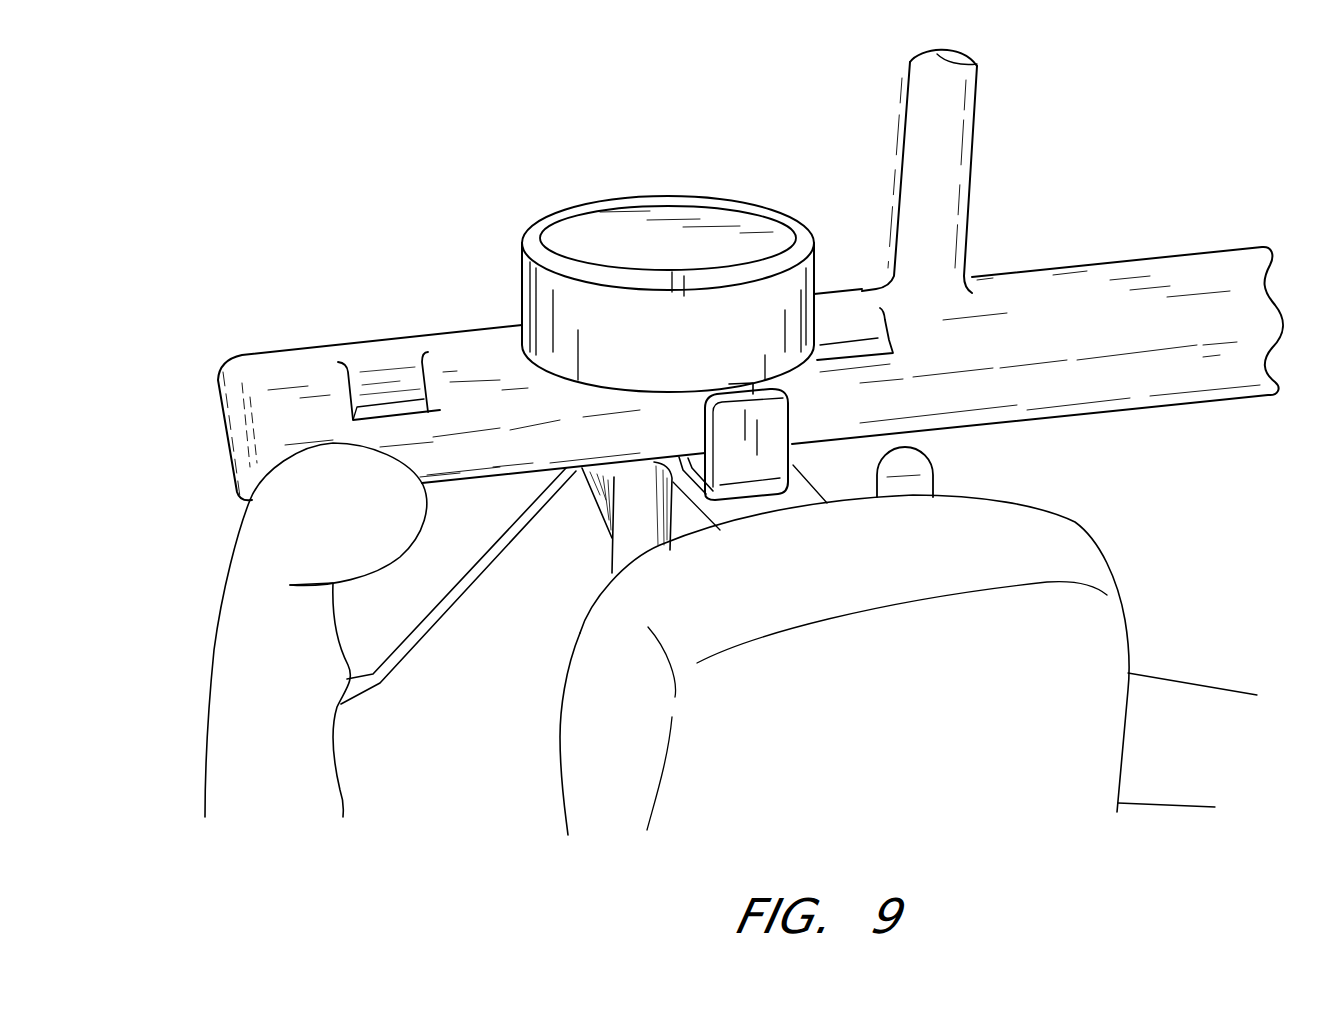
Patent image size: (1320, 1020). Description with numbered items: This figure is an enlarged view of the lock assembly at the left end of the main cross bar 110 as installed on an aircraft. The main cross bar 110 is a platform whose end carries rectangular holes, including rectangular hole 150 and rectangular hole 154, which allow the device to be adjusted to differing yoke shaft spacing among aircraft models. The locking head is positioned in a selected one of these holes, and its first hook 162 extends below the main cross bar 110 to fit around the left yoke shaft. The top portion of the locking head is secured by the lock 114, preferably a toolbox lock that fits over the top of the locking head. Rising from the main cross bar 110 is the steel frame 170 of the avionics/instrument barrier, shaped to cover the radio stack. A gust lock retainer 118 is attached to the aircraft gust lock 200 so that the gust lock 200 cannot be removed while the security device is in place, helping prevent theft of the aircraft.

The main cross bar 110 is at (1138, 388).
The lock 114 is at (692, 207).
The gust lock retainer 118 is at (740, 466).
The rectangular hole 150 is at (383, 382).
The rectangular hole 154 is at (850, 338).
The first hook 162 is at (921, 466).
The steel frame 170 is at (946, 145).
The gust lock 200 is at (437, 613).